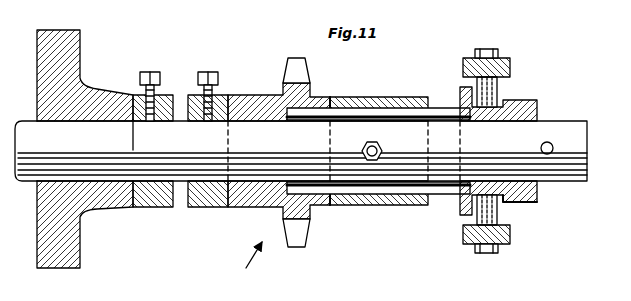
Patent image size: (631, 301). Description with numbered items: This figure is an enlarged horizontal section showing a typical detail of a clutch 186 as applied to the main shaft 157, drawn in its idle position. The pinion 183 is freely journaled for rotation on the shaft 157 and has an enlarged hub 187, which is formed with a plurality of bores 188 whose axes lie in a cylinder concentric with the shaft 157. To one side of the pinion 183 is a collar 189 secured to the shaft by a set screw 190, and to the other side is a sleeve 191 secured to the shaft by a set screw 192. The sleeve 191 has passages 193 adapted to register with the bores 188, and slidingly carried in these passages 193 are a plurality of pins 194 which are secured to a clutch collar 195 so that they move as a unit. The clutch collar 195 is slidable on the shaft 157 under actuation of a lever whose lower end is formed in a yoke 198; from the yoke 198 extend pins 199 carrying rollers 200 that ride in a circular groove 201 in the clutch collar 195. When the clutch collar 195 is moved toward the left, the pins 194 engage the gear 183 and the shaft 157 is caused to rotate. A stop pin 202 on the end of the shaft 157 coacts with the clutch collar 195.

The main shaft 157 is at (112, 162).
The pinion 183 is at (262, 95).
The clutch 186 is at (241, 268).
The enlarged hub 187 is at (266, 204).
The bores 188 is at (307, 117).
The collar 189 is at (201, 196).
The set screw 190 is at (208, 72).
The sleeve 191 is at (380, 206).
The set screw 192 is at (374, 144).
The passages 193 is at (331, 98).
The pins 194 is at (444, 107).
The clutch collar 195 is at (523, 118).
The yoke 198 is at (528, 61).
The pins 199 is at (490, 49).
The rollers 200 is at (500, 86).
The circular groove 201 is at (518, 209).
The stop pin 202 is at (551, 144).